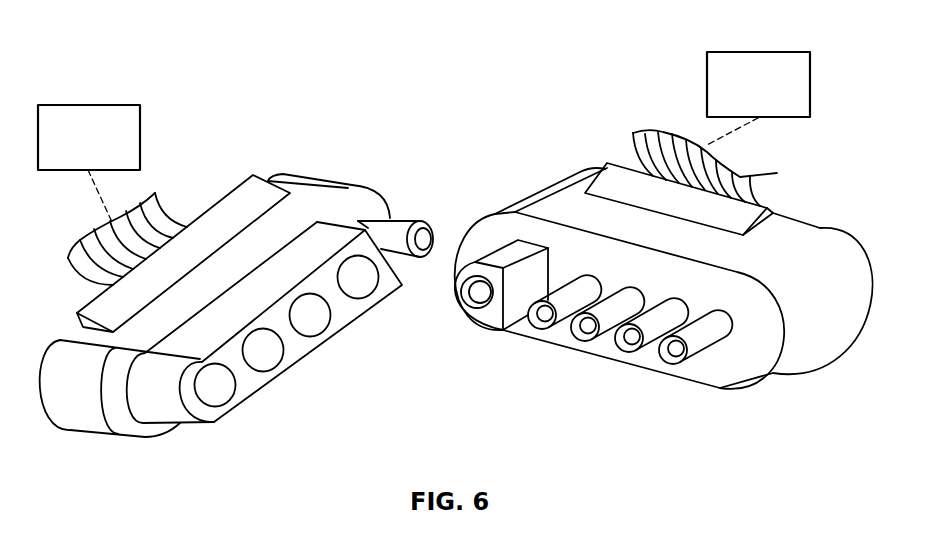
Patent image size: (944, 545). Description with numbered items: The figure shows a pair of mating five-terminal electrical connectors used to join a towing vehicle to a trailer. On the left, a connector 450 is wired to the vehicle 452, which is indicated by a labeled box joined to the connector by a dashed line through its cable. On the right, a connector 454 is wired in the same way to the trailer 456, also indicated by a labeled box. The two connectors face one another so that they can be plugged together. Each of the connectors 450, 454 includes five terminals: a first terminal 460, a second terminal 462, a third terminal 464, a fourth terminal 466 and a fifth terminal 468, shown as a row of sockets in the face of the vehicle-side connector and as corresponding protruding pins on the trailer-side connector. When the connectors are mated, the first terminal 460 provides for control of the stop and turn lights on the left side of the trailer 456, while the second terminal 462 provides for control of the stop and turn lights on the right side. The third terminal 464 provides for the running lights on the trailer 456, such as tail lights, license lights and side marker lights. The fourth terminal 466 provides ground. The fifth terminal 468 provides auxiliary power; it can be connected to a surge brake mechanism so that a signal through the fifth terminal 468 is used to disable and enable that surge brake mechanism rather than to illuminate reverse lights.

The connector 450 is at (176, 448).
The vehicle 452 is at (102, 105).
The connector 454 is at (777, 399).
The trailer 456 is at (767, 52).
The first terminal 460 is at (421, 222).
The second terminal 462 is at (365, 284).
The third terminal 464 is at (312, 325).
The fourth terminal 466 is at (265, 360).
The fifth terminal 468 is at (220, 395).